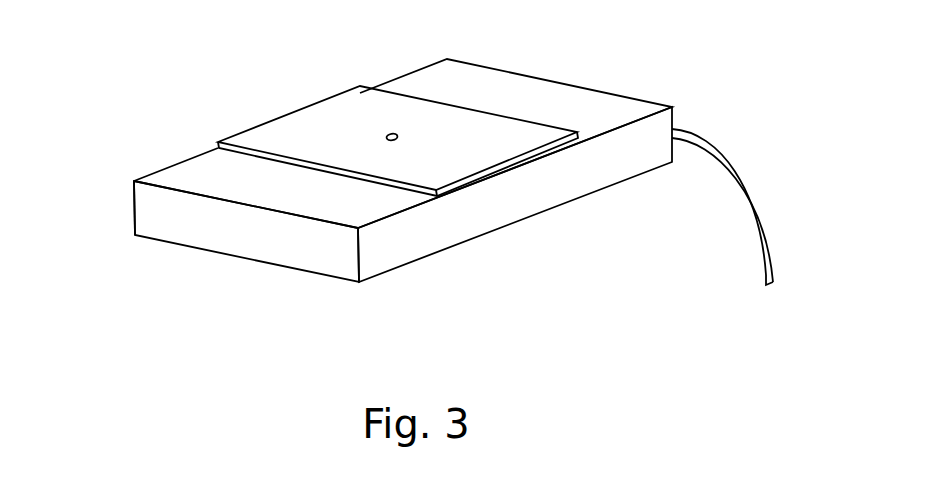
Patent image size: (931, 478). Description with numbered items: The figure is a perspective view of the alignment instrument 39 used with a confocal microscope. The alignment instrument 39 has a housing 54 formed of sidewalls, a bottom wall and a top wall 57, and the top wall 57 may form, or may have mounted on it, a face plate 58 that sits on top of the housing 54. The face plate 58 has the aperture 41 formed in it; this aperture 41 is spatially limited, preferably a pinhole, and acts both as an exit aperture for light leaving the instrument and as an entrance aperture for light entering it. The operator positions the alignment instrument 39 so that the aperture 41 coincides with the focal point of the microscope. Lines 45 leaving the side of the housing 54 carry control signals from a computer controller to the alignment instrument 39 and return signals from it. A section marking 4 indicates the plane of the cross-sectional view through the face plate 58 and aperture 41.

The cross-sectional view line 4 is at (363, 147).
The alignment instrument 39 is at (368, 208).
The aperture 41 is at (388, 135).
The lines 45 is at (747, 207).
The housing 54 is at (134, 200).
The top wall 57 is at (190, 175).
The face plate 58 is at (395, 141).